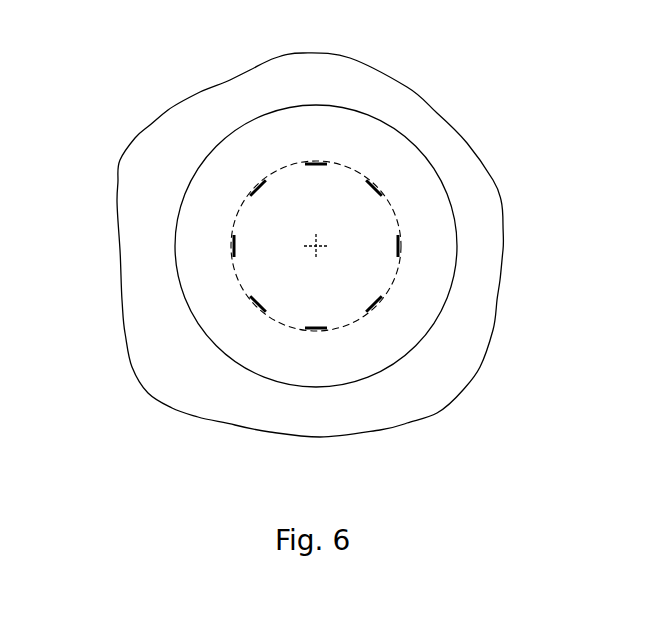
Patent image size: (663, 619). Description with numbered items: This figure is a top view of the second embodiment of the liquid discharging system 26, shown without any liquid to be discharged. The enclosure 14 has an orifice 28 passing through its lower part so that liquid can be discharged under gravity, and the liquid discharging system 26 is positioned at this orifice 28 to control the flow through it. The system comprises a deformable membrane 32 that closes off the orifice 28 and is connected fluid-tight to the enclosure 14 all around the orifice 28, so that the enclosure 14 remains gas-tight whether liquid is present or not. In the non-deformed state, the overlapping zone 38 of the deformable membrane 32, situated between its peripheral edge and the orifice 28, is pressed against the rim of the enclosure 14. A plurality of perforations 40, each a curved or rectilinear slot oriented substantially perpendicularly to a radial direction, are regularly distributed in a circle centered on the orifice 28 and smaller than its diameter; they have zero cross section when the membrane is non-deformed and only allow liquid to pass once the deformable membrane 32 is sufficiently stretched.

The enclosure 14 is at (395, 403).
The liquid discharging system 26 is at (475, 102).
The orifice 28 is at (280, 167).
The deformable membrane 32 is at (205, 157).
The overlapping zone 38 is at (210, 232).
The perforation 40 is at (400, 243).